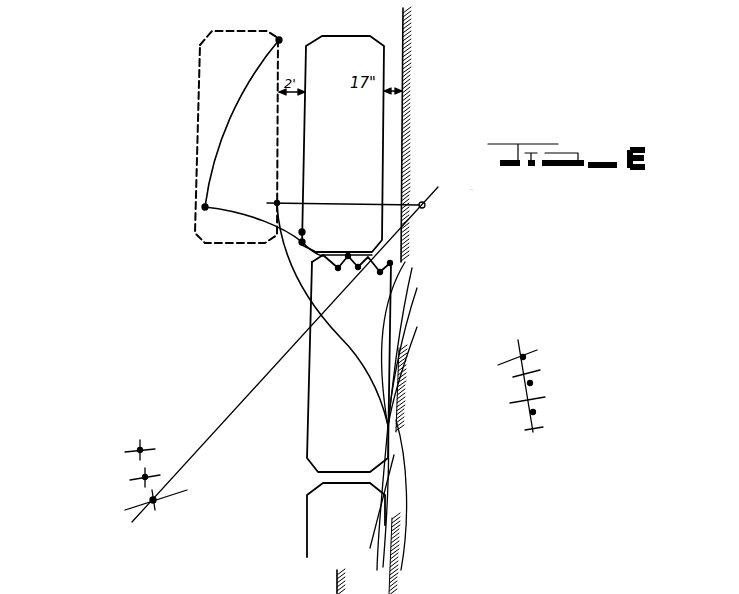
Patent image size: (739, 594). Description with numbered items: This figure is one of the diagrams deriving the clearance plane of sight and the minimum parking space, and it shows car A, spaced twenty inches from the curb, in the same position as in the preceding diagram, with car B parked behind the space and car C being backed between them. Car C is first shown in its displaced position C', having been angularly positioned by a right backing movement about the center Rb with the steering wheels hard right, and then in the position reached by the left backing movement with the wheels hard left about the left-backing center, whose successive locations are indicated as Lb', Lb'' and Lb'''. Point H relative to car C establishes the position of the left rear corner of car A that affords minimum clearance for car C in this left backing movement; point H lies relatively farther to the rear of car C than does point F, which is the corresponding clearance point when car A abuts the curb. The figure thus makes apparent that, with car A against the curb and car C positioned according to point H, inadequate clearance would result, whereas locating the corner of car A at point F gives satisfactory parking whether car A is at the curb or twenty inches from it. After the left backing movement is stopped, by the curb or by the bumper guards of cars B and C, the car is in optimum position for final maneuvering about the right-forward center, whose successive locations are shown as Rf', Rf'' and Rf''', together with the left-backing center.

The car A is at (343, 145).
The car C is at (349, 367).
The car B is at (346, 520).
The car C in displaced position C' is at (219, 137).
The point F is at (306, 235).
The point H is at (298, 247).
The center Rb is at (435, 213).
The center Lb' is at (139, 507).
The center Lb'' is at (130, 481).
The center Lb''' is at (123, 452).
The center Rf' is at (531, 355).
The center Rf'' is at (545, 383).
The center Rf''' is at (544, 413).